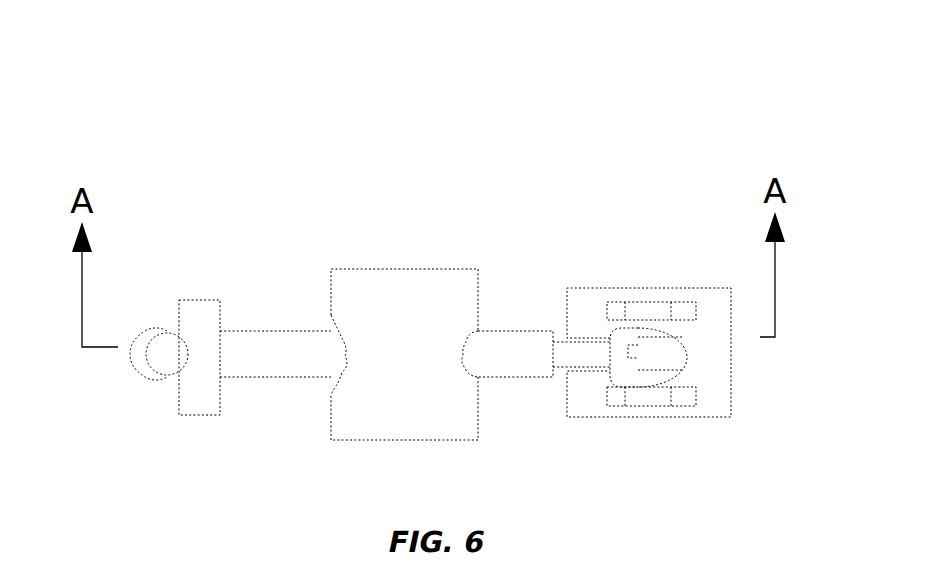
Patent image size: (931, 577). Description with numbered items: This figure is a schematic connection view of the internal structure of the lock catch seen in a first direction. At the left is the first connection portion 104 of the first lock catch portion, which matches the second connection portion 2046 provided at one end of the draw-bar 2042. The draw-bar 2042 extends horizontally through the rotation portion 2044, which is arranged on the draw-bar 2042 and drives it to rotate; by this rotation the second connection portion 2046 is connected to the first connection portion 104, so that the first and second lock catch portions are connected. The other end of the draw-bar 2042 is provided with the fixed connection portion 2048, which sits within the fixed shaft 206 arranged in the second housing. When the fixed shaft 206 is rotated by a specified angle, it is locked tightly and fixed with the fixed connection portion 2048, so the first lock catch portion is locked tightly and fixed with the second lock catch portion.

The first connection portion 104 is at (207, 348).
The draw-bar 2042 is at (254, 348).
The rotation portion 2044 is at (416, 295).
The second connection portion 2046 is at (169, 357).
The fixed shaft 206 is at (703, 400).
The fixed connection portion 2048 is at (620, 357).